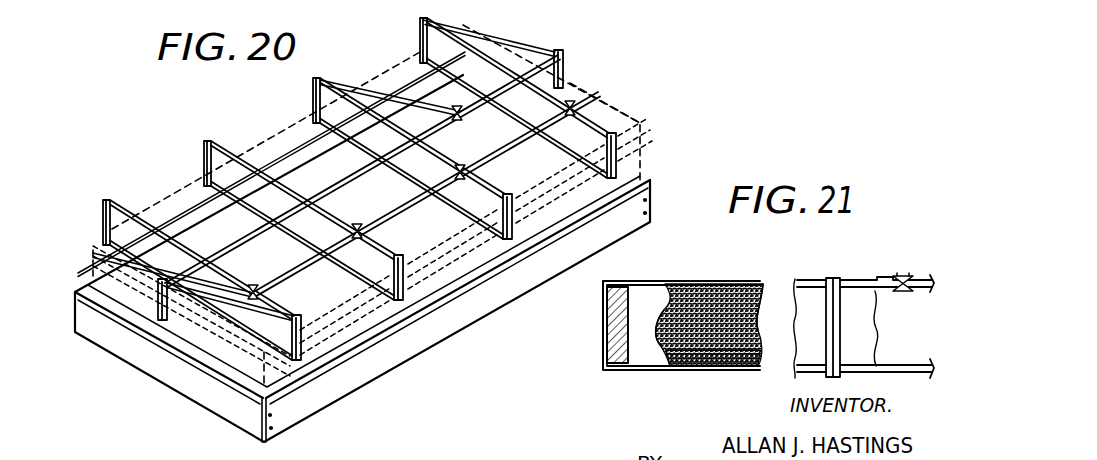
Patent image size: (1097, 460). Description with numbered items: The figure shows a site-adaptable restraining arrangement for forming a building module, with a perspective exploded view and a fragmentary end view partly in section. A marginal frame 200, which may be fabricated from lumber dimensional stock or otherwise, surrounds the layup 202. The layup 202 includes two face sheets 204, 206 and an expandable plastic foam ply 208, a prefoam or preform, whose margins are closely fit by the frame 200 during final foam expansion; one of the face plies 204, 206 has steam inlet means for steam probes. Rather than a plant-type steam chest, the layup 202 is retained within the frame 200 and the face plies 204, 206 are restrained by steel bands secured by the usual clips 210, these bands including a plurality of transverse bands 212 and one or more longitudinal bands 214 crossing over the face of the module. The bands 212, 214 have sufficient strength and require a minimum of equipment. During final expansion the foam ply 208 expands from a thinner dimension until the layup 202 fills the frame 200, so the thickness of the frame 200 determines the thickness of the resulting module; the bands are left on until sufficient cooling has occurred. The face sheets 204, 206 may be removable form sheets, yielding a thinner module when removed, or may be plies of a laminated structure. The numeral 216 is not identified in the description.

In FIG. 20, the marginal frame 200 is at (483, 311).
In FIG. 21, the marginal frame 200 is at (650, 337).
In FIG. 20, the layup 202 is at (645, 95).
In FIG. 21, the layup 202 is at (761, 299).
In FIG. 20, the face sheet 204 is at (641, 126).
In FIG. 21, the face sheet 204 is at (750, 283).
In FIG. 20, the face sheet 206 is at (652, 150).
In FIG. 21, the face sheet 206 is at (750, 368).
In FIG. 20, the expandable plastic foam ply 208 is at (644, 139).
In FIG. 21, the expandable plastic foam ply 208 is at (750, 332).
In FIG. 21, the clips 210 is at (899, 279).
In FIG. 20, the transverse bands 212 is at (358, 250).
In FIG. 21, the transverse bands 212 is at (604, 290).
In FIG. 20, the longitudinal bands 214 is at (560, 53).
In FIG. 21, the longitudinal bands 214 is at (835, 280).
In FIG. 20, the member 216 is at (498, 4).